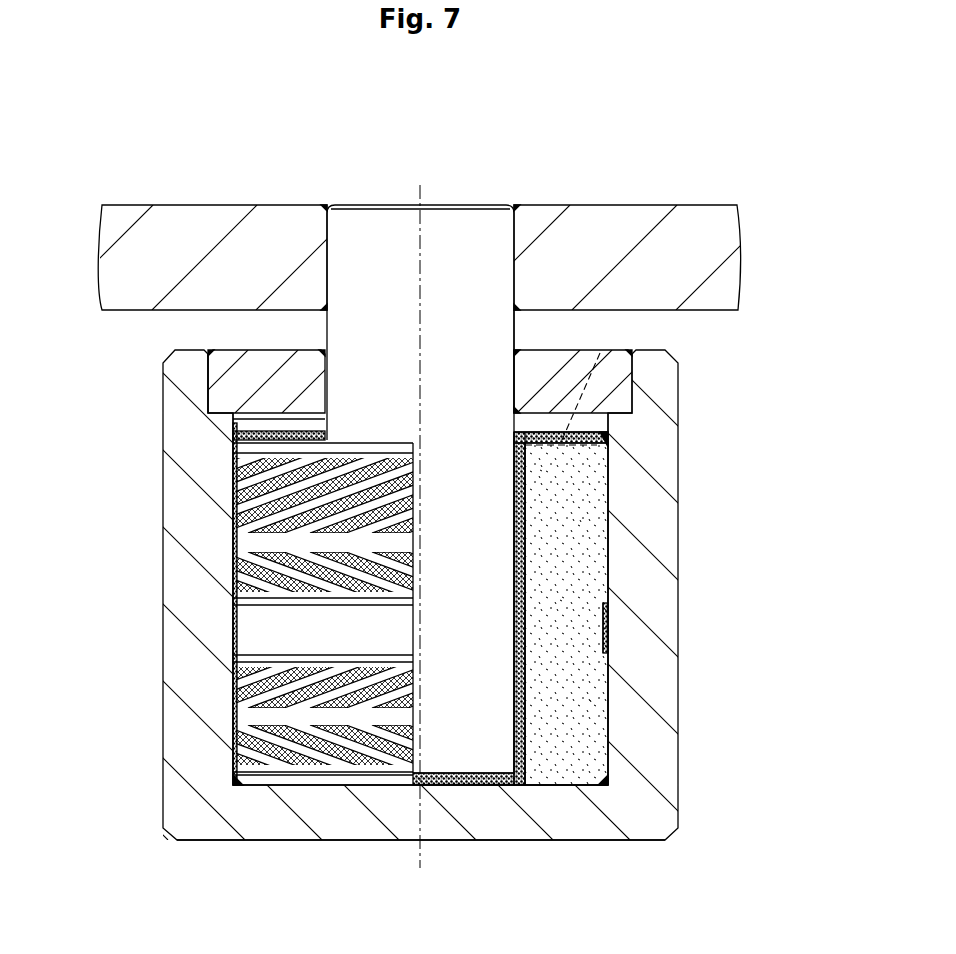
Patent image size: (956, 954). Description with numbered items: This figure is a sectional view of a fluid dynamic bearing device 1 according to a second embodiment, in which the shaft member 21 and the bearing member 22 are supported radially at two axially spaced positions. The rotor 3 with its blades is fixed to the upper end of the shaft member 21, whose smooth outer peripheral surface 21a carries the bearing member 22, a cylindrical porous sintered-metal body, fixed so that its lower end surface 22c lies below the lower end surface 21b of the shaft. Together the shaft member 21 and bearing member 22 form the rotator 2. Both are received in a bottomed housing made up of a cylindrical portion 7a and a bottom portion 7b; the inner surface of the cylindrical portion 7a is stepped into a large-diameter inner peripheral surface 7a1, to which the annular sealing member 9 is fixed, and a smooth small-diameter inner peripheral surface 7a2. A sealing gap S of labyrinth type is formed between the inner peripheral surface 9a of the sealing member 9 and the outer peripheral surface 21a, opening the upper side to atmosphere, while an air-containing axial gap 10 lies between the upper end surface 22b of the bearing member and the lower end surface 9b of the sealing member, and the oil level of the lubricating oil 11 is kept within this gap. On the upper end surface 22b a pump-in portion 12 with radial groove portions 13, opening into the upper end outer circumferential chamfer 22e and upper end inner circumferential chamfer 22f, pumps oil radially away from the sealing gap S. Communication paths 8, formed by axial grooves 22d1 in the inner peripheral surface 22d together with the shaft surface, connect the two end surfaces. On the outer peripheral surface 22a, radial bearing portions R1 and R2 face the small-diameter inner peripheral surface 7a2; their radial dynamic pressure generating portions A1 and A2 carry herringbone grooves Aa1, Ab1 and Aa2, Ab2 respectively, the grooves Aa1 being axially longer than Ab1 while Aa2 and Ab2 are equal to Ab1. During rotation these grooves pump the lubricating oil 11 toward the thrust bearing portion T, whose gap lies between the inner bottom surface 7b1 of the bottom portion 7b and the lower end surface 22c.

The fluid dynamic bearing device 1 is at (756, 392).
The rotator 2 is at (522, 188).
The rotor 3 is at (615, 235).
The cylindrical portion 7a is at (182, 503).
The large-diameter inner peripheral surface 7a1 is at (213, 392).
The small-diameter inner peripheral surface 7a2 is at (233, 690).
The bottom portion 7b is at (518, 823).
The inner bottom surface 7b1 is at (383, 787).
The communication path 8 is at (516, 533).
The sealing member 9 is at (612, 375).
The inner peripheral surface 9a is at (514, 392).
The lower end surface 9b is at (236, 421).
The axial gap 10 is at (285, 427).
The lubricating oil 11 is at (525, 478).
The pump-in portion 12 is at (536, 434).
The groove portions 13 is at (602, 351).
The shaft member 21 is at (458, 243).
The outer peripheral surface 21a is at (527, 742).
The lower end surface 21b is at (457, 782).
The bearing member 22 is at (584, 622).
The outer peripheral surface 22a is at (612, 718).
The upper end surface 22b is at (587, 433).
The lower end surface 22c is at (285, 787).
The inner peripheral surface 22d is at (520, 625).
The axial grooves 22d1 is at (520, 596).
The upper end outer circumferential chamfer 22e is at (236, 445).
The upper end inner circumferential chamfer 22f is at (517, 438).
The radial bearing portion R1 is at (404, 542).
The radial bearing portion R2 is at (404, 730).
The radial dynamic pressure generating portion A1 is at (287, 598).
The radial dynamic pressure generating portion A2 is at (290, 661).
The upper dynamic pressure generating grooves Aa1 is at (392, 463).
The lower dynamic pressure generating grooves Ab1 is at (331, 590).
The upper dynamic pressure generating grooves Aa2 is at (386, 672).
The lower dynamic pressure generating grooves Ab2 is at (322, 767).
The sealing gap S is at (513, 367).
The thrust bearing portion T is at (564, 791).